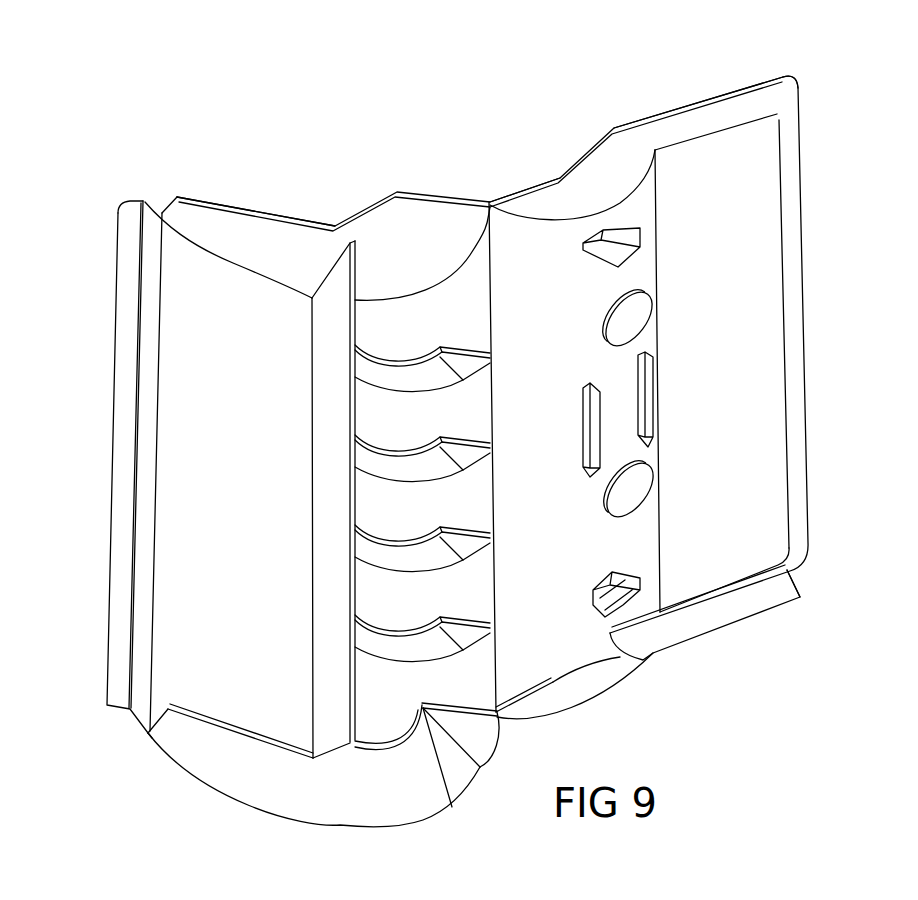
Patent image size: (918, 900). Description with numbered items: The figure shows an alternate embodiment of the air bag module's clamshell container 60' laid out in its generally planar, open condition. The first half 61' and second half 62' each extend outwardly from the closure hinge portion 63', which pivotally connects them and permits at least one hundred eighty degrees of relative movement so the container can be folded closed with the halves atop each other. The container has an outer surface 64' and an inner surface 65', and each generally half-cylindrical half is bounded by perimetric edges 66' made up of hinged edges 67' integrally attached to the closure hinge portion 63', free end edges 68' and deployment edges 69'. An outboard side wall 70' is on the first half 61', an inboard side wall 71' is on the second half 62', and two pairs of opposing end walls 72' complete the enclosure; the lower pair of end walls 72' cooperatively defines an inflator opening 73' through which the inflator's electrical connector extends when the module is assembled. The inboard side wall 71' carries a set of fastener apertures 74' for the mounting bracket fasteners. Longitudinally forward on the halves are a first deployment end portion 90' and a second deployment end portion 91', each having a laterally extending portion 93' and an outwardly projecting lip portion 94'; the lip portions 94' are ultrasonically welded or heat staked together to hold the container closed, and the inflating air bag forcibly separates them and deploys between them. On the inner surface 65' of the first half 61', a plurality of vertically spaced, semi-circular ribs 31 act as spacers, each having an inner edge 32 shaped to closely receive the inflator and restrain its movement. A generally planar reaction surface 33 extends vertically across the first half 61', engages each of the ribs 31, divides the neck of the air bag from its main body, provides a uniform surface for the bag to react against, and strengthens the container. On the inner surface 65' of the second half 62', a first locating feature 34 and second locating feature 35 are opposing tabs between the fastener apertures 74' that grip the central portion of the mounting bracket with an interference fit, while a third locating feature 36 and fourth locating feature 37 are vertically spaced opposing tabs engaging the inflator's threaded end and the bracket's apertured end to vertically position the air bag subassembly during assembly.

The clamshell container 60' is at (492, 354).
The first half 61' is at (256, 162).
The second half 62' is at (706, 68).
The closure hinge portion 63' is at (560, 416).
The outer surface 64' is at (152, 774).
The inner surface 65' is at (807, 151).
The perimetric edges 66' is at (509, 233).
The hinged edges 67' is at (504, 632).
The free end edges 68' is at (442, 450).
The deployment edges 69' is at (459, 426).
The outboard side wall 70' is at (208, 457).
The inboard side wall 71' is at (744, 324).
The end walls 72' is at (492, 453).
The inflator opening 73' is at (372, 758).
The fastener apertures 74' is at (721, 396).
The first deployment end portion 90' is at (75, 385).
The second deployment end portion 91' is at (844, 372).
The laterally extending portion 93' is at (463, 656).
The lip portion 94' is at (453, 464).
The ribs 31 is at (372, 455).
The inner edge 32 is at (415, 355).
The reaction surface 33 is at (328, 385).
The first locating feature 34 is at (583, 425).
The second locating feature 35 is at (650, 387).
The third locating feature 36 is at (600, 253).
The fourth locating feature 37 is at (633, 585).